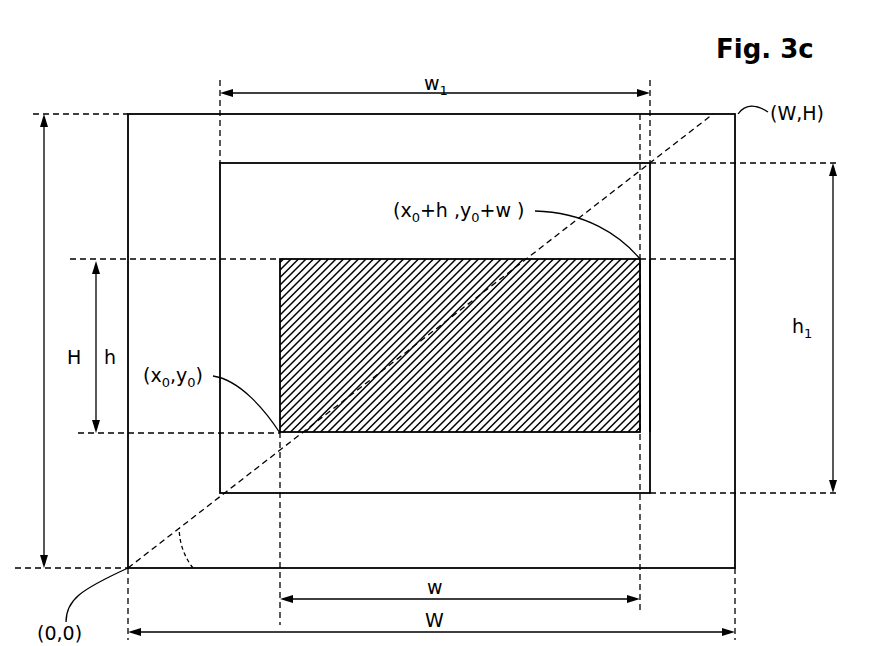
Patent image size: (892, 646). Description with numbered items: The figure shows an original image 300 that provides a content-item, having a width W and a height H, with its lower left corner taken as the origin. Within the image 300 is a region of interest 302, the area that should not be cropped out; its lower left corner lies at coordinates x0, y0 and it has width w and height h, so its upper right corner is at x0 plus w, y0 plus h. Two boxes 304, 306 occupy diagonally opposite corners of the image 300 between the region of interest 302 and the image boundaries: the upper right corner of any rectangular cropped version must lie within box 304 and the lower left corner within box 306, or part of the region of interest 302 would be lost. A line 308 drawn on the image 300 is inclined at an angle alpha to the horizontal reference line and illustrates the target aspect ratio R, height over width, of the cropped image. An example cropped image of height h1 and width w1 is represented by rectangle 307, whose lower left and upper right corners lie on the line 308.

The image 300 is at (150, 114).
The region of interest 302 is at (640, 345).
The box 304 is at (709, 329).
The box 306 is at (192, 474).
The rectangle 307 is at (650, 408).
The line 308 is at (688, 133).